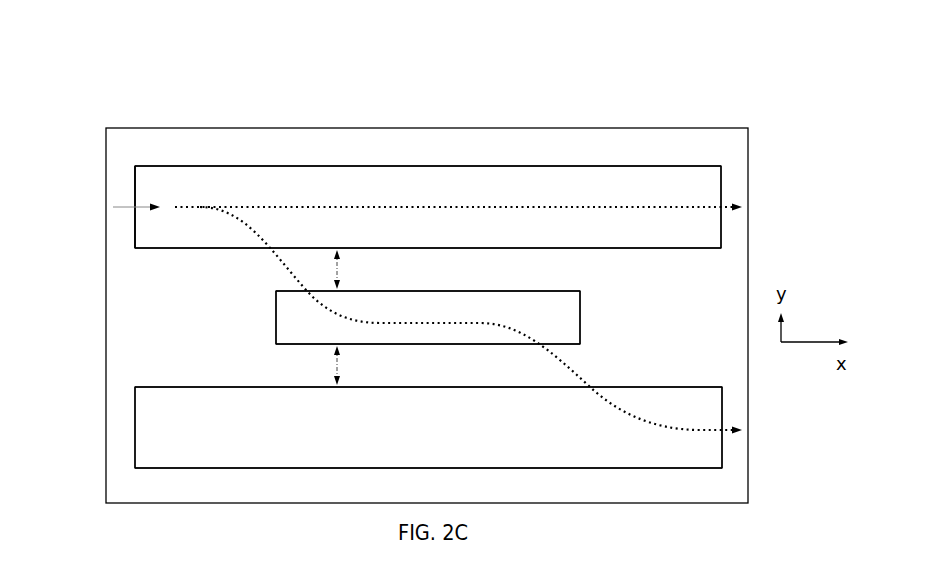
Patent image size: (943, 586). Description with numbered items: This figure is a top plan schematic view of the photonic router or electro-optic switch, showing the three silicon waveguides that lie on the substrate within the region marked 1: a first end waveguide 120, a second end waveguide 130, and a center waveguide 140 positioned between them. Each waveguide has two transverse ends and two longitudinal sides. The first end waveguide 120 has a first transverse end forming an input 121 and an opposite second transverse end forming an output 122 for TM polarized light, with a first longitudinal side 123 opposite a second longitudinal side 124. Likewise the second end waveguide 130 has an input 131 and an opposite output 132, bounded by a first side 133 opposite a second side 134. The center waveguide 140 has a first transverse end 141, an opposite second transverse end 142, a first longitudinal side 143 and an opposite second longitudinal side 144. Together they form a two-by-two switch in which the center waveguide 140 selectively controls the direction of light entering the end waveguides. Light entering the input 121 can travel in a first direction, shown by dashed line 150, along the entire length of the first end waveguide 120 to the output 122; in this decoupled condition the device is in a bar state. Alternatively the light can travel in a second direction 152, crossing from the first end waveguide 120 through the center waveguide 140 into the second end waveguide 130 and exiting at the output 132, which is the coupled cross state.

The optical device / substrate 1 is at (427, 302).
The first end waveguide 120 is at (562, 157).
The first transverse end (input) of first waveguide 121 is at (135, 197).
The second transverse end (output) of first waveguide 122 is at (721, 196).
The first longitudinal side of first waveguide 123 is at (205, 166).
The second longitudinal side of first waveguide 124 is at (186, 250).
The second end waveguide 130 is at (606, 476).
The first transverse end (input) of second waveguide 131 is at (135, 432).
The second transverse end (output) of second waveguide 132 is at (722, 415).
The first longitudinal side of second waveguide 133 is at (201, 386).
The second longitudinal side of second waveguide 134 is at (262, 470).
The center waveguide 140 is at (592, 306).
The first transverse end of center waveguide 141 is at (276, 325).
The second transverse end of center waveguide 142 is at (581, 325).
The first longitudinal side of center waveguide 143 is at (388, 291).
The second longitudinal side of center waveguide 144 is at (434, 344).
The first direction (dashed line) 150 is at (360, 205).
The second direction 152 is at (467, 322).